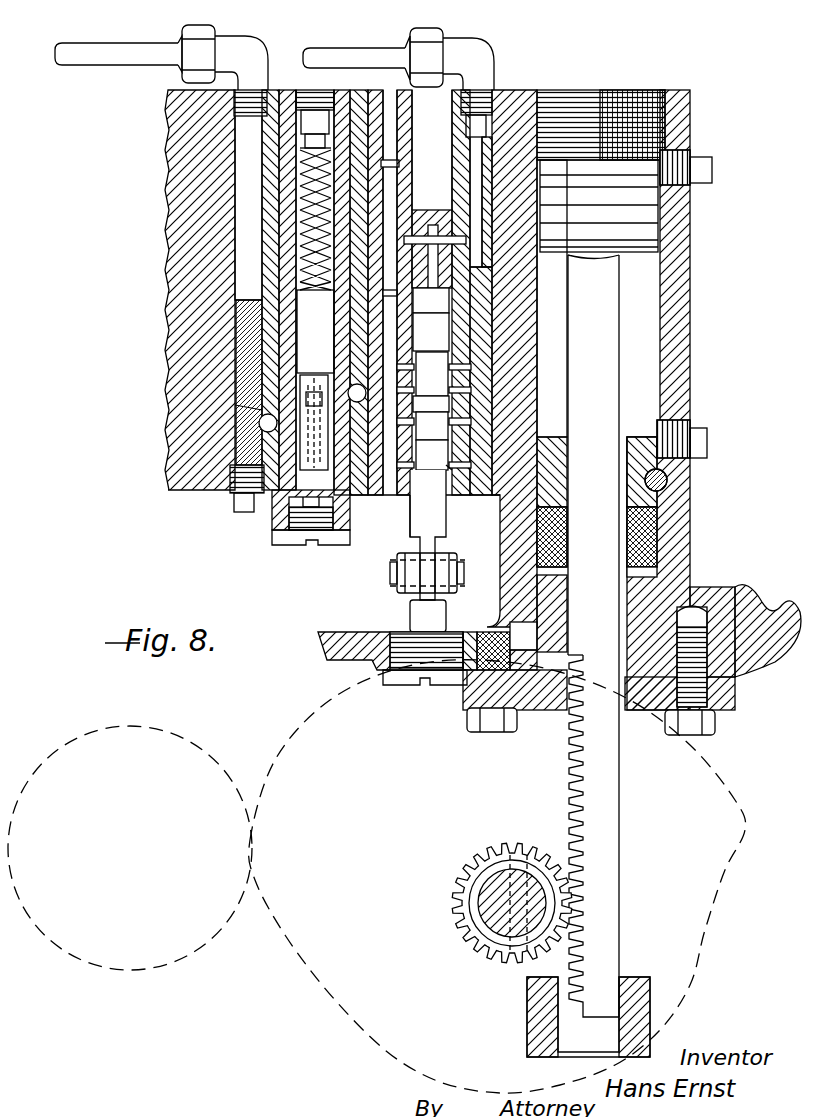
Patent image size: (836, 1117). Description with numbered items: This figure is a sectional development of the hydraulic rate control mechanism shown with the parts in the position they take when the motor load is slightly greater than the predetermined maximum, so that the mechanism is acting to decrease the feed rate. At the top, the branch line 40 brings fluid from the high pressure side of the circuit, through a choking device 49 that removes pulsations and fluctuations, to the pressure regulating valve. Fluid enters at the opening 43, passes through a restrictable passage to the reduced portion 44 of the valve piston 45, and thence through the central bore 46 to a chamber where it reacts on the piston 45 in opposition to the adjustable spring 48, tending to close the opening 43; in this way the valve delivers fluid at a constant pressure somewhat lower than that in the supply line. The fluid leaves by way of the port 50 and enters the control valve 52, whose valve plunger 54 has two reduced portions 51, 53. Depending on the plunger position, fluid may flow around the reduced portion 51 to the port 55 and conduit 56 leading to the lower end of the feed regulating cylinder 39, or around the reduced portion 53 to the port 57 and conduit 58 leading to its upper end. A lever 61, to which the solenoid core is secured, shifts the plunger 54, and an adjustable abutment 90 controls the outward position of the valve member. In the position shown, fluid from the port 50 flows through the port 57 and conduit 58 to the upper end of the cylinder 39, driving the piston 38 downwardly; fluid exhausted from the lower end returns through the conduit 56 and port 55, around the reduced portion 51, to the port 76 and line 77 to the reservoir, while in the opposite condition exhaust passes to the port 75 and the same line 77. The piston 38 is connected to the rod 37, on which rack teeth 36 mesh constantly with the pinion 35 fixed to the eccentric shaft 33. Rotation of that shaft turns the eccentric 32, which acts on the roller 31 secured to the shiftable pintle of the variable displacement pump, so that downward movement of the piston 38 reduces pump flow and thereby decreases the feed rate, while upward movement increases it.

The roller 31 is at (230, 1005).
The eccentric 32 is at (355, 1012).
The eccentric shaft 33 is at (498, 876).
The pinion 35 is at (519, 848).
The rack teeth 36 is at (580, 768).
The rod 37 is at (612, 756).
The piston 38 is at (604, 238).
The cylinder 39 is at (660, 302).
The branch line 40 is at (133, 36).
The opening 43 is at (205, 490).
The reduced portion 44 is at (315, 290).
The valve piston 45 is at (315, 331).
The central bore 46 is at (266, 500).
The adjustable spring 48 is at (297, 190).
The choking device 49 is at (235, 405).
The port 50 is at (300, 392).
The reduced portion 51 is at (432, 453).
The control valve 52 is at (410, 497).
The reduced portion 53 is at (432, 374).
The valve plunger 54 is at (428, 535).
The port 55 is at (455, 425).
The conduit 56 is at (512, 358).
The port 57 is at (435, 201).
The conduit 58 is at (501, 202).
The lever 61 is at (450, 562).
The port 75 is at (398, 332).
The port 76 is at (446, 476).
The line 77 is at (370, 52).
The adjustable abutment 90 is at (418, 614).